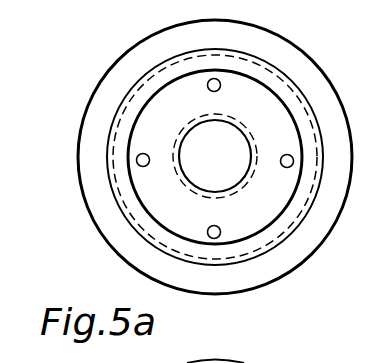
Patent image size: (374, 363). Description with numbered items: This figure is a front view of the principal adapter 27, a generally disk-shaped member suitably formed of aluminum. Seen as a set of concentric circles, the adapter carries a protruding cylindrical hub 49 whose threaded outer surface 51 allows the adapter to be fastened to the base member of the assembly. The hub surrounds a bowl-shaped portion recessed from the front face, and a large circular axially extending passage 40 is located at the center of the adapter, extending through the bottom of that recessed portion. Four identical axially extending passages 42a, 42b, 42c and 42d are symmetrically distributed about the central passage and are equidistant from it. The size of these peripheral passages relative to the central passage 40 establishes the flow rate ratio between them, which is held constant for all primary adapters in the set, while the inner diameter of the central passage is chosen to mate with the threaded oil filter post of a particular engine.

The principal adapter 27 is at (97, 77).
The cylindrical hub 49 is at (262, 77).
The threaded outer surface 51 is at (137, 230).
The central axially extending passage 40 is at (220, 166).
The axially extending passage 42a is at (218, 90).
The axially extending passage 42b is at (208, 232).
The axially extending passage 42c is at (157, 147).
The axially extending passage 42d is at (283, 167).